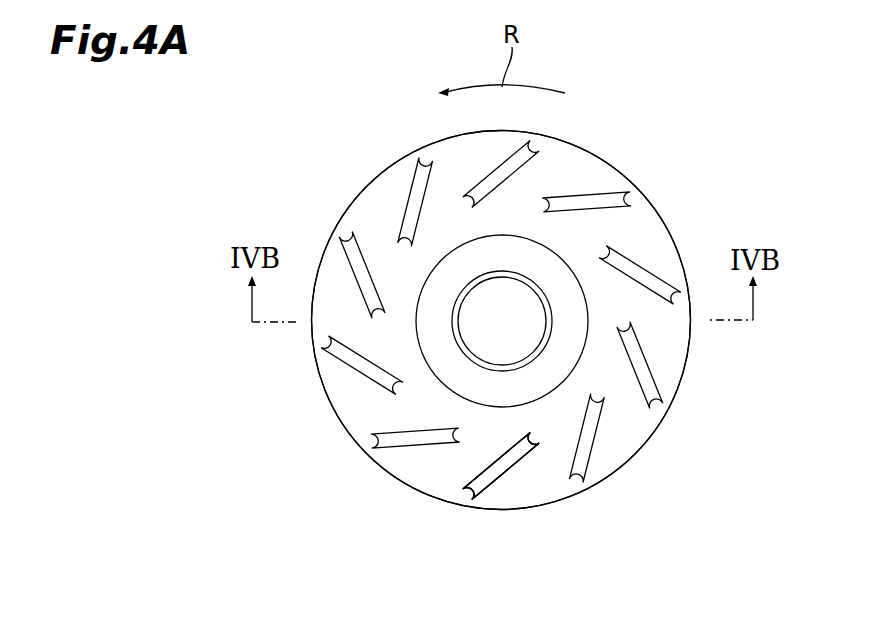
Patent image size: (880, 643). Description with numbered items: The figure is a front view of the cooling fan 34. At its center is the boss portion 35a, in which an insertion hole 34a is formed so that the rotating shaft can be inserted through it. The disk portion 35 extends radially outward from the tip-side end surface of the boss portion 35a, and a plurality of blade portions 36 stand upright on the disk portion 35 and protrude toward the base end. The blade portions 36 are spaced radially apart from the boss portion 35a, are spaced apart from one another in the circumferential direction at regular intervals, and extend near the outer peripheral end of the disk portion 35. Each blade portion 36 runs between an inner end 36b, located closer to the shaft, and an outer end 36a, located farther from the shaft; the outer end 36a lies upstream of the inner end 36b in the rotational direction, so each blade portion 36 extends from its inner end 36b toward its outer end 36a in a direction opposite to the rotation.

The cooling fan 34 is at (590, 147).
The insertion hole 34a is at (460, 332).
The disk portion 35 is at (646, 447).
The boss portion 35a is at (488, 406).
The blade portions 36 is at (507, 477).
The outer end 36a is at (465, 497).
The inner end 36b is at (540, 435).